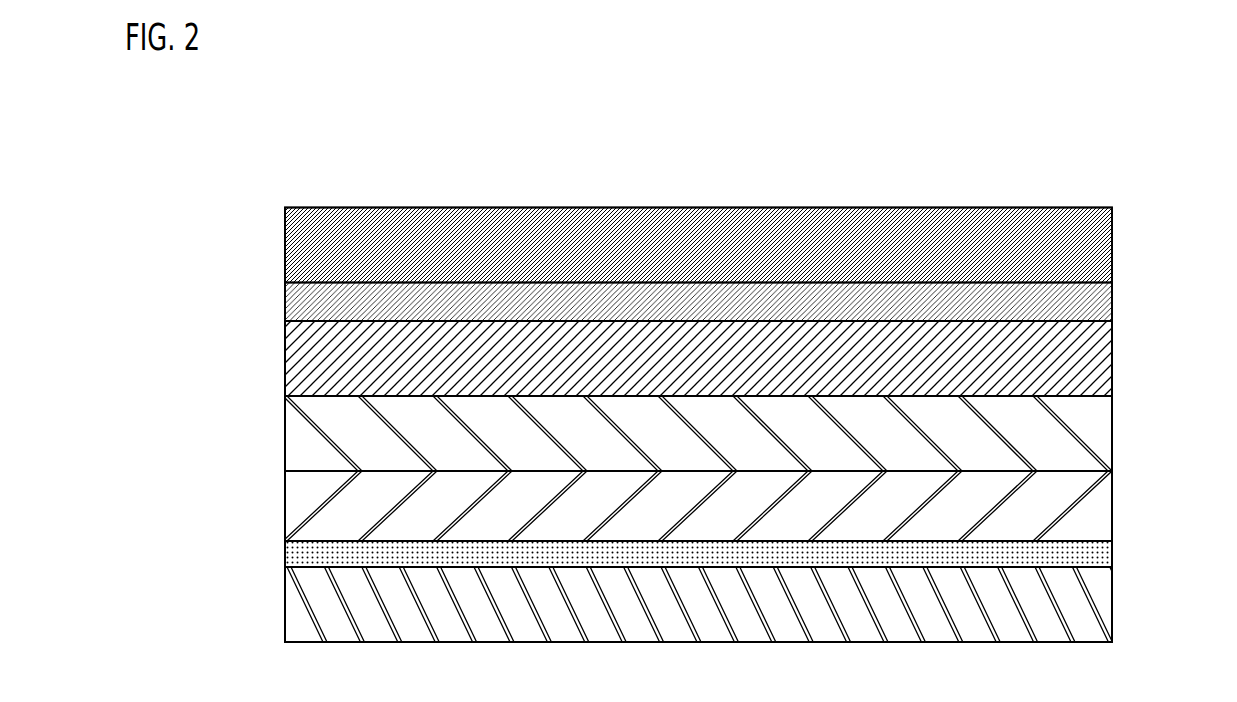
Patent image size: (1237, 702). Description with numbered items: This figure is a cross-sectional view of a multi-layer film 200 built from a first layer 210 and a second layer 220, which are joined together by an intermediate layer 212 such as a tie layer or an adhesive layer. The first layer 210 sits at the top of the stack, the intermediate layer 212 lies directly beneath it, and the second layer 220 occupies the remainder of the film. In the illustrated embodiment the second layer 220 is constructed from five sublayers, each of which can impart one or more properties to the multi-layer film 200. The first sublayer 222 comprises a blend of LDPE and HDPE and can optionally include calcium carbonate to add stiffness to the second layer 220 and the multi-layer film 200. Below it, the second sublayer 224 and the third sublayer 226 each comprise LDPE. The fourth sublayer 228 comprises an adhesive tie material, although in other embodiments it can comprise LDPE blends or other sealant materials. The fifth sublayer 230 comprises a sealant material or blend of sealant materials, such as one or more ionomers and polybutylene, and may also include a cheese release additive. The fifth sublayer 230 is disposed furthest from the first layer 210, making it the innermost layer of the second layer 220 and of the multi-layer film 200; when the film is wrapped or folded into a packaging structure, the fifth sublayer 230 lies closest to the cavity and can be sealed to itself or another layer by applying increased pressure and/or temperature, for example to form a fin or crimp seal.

The multi-layer film 200 is at (1095, 121).
The first layer 210 is at (285, 247).
The intermediate layer 212 is at (285, 303).
The second layer 220 is at (1120, 323).
The first sublayer 222 is at (285, 362).
The second sublayer 224 is at (285, 428).
The third sublayer 226 is at (285, 498).
The fourth sublayer 228 is at (285, 553).
The fifth sublayer 230 is at (285, 608).